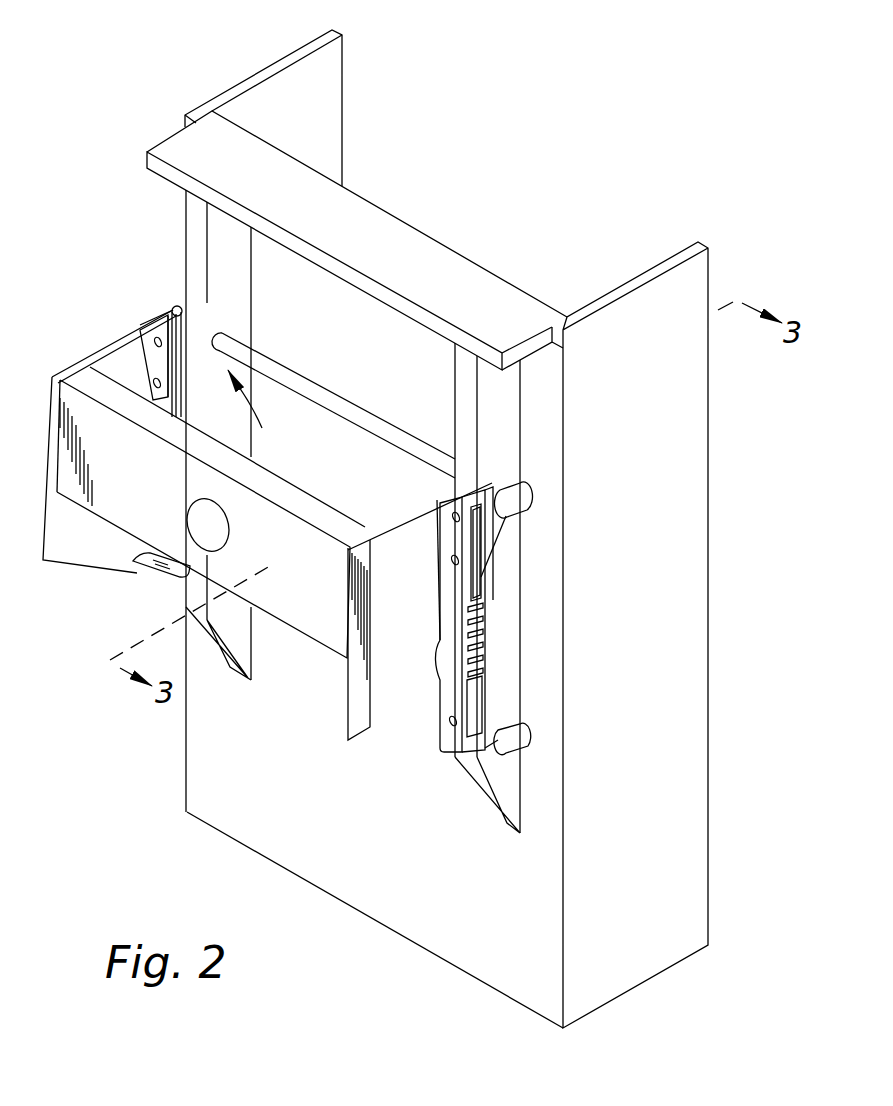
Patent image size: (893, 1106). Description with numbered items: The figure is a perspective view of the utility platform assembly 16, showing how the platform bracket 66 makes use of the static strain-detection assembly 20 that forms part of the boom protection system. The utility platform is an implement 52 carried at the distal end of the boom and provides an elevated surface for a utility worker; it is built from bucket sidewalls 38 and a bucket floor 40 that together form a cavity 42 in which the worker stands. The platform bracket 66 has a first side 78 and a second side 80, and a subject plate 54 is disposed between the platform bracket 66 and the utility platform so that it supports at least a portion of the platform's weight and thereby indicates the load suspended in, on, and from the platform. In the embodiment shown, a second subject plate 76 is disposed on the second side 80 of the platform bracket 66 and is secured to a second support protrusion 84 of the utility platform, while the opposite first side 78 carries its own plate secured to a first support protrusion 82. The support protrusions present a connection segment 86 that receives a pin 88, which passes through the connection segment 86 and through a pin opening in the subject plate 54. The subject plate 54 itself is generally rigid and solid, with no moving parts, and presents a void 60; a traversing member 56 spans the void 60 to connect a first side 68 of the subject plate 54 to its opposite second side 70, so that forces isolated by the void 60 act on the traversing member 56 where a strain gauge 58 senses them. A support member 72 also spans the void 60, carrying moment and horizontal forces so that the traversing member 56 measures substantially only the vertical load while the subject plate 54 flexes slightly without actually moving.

The utility platform assembly 16 is at (567, 190).
The static strain-detection assembly 20 is at (410, 800).
The bucket sidewall 38 is at (318, 95).
The bucket floor 40 is at (660, 992).
The cavity 42 is at (478, 163).
The implement 52 is at (662, 112).
The subject plate 54 is at (172, 306).
The traversing member 56 is at (480, 632).
The strain gauge 58 is at (483, 657).
The void 60 is at (482, 577).
The platform bracket 66 is at (127, 507).
The first side 68 is at (457, 535).
The second side 70 is at (494, 536).
The support member 72 is at (488, 480).
The second subject plate 76 is at (128, 312).
The first side of the platform bracket 78 is at (172, 273).
The second side of the platform bracket 80 is at (427, 397).
The first support protrusion 82 is at (225, 289).
The second support protrusion 84 is at (462, 440).
The connection segment 86 is at (257, 407).
The pin 88 is at (300, 378).